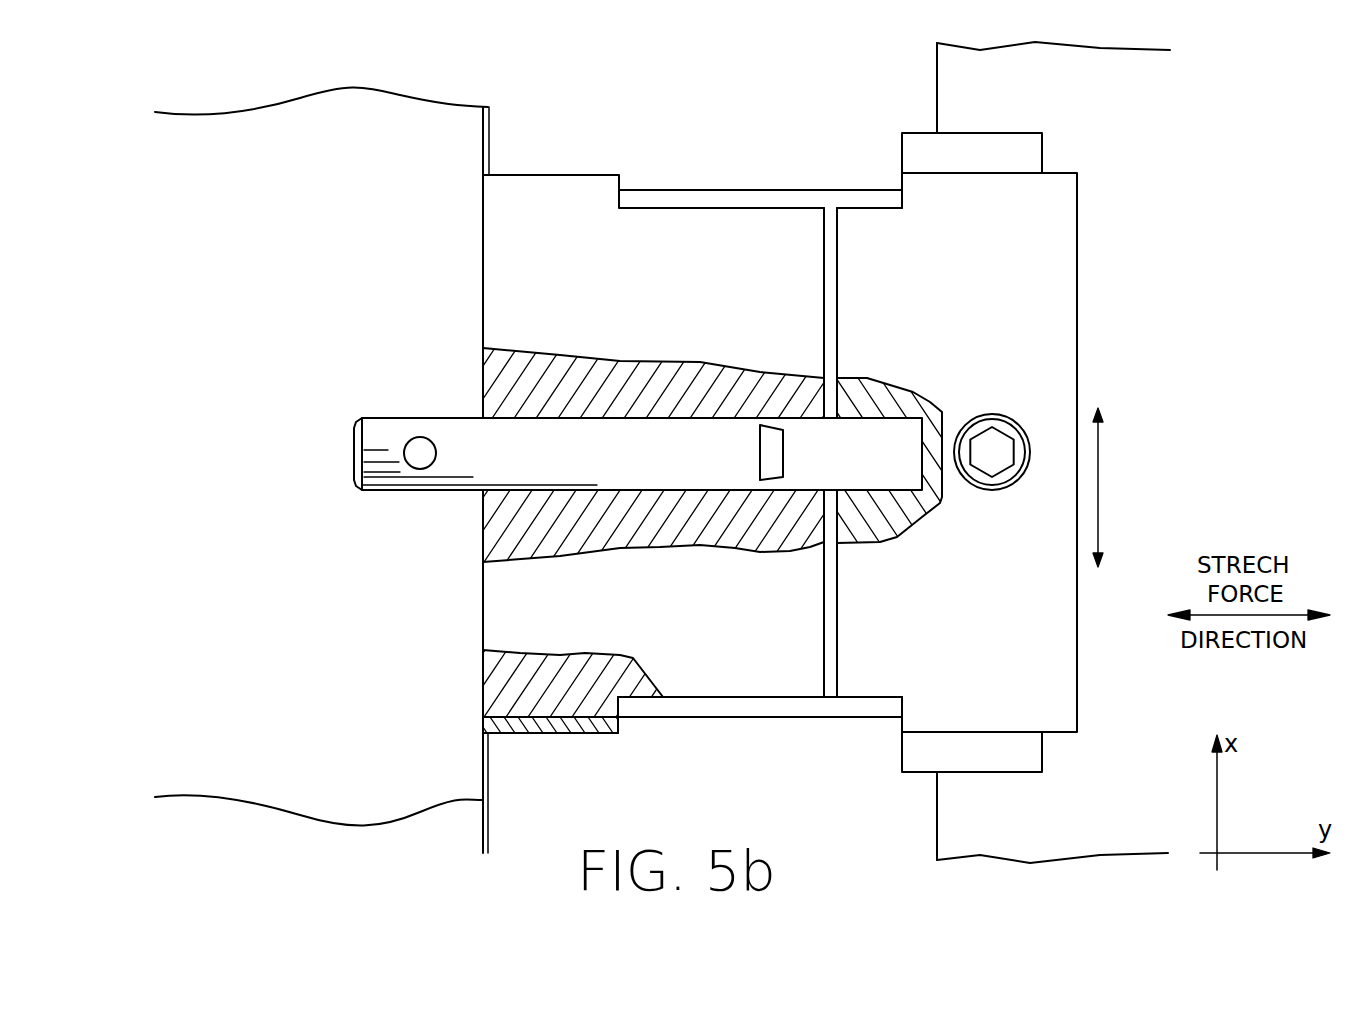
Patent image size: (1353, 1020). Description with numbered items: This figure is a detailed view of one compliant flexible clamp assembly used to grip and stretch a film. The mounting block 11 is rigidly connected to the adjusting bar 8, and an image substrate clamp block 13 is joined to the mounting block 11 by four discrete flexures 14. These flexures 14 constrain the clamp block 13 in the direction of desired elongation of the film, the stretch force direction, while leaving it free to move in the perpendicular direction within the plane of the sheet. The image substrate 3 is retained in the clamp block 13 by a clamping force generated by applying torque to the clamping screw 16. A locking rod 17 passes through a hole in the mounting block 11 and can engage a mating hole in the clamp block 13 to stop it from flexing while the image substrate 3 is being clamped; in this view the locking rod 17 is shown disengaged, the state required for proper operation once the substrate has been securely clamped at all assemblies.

The adjusting bar 8 is at (380, 92).
The image substrate 3 is at (937, 88).
The flexures 14 is at (760, 187).
The image substrate clamp block 13 is at (1077, 220).
The clamping screw 16 is at (990, 410).
The locking rod 17 is at (352, 455).
The mounting block 11 is at (483, 520).